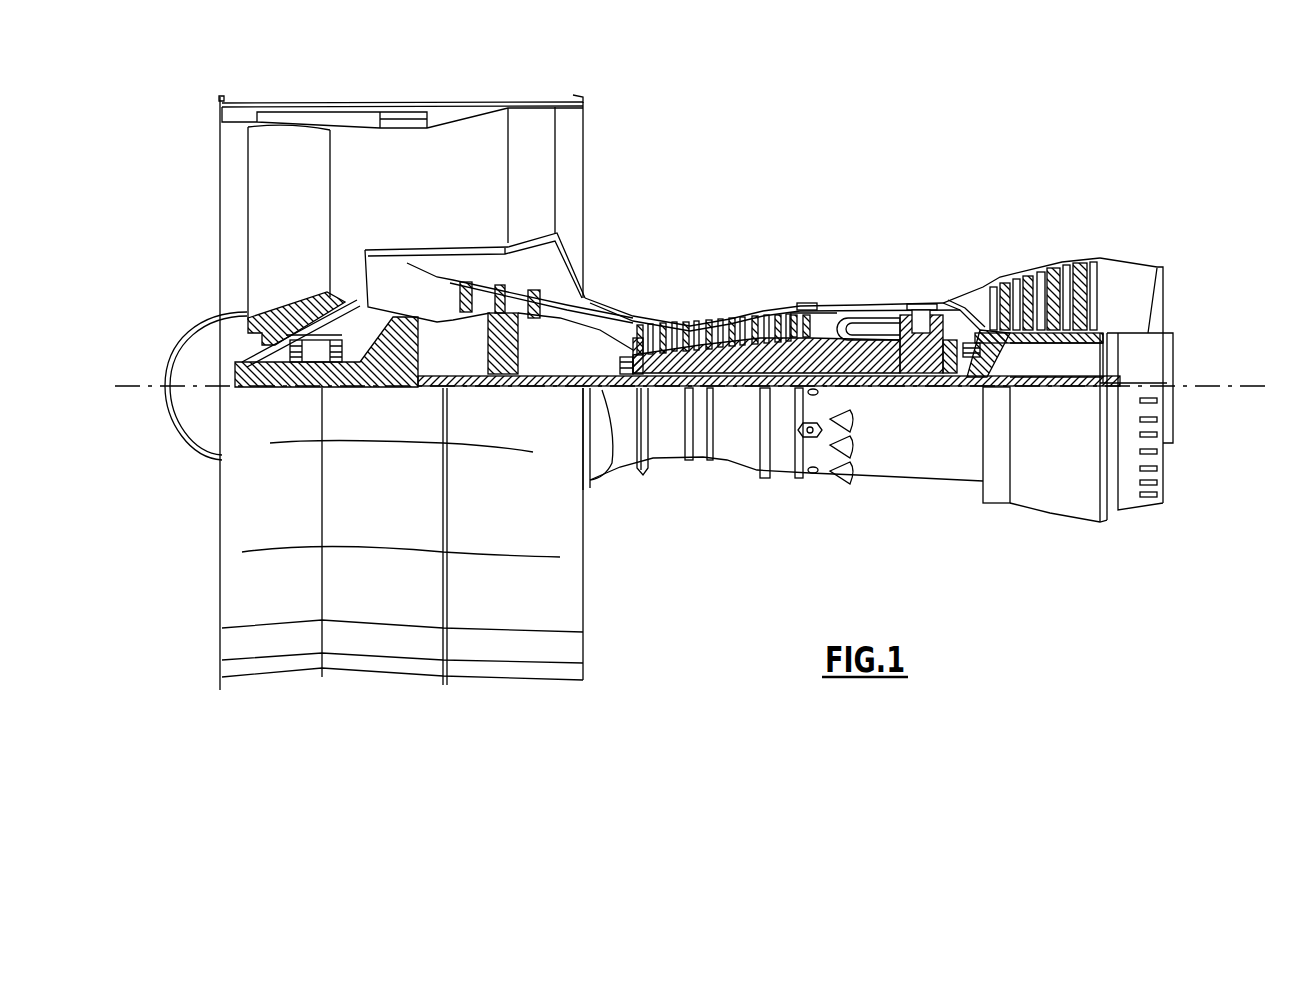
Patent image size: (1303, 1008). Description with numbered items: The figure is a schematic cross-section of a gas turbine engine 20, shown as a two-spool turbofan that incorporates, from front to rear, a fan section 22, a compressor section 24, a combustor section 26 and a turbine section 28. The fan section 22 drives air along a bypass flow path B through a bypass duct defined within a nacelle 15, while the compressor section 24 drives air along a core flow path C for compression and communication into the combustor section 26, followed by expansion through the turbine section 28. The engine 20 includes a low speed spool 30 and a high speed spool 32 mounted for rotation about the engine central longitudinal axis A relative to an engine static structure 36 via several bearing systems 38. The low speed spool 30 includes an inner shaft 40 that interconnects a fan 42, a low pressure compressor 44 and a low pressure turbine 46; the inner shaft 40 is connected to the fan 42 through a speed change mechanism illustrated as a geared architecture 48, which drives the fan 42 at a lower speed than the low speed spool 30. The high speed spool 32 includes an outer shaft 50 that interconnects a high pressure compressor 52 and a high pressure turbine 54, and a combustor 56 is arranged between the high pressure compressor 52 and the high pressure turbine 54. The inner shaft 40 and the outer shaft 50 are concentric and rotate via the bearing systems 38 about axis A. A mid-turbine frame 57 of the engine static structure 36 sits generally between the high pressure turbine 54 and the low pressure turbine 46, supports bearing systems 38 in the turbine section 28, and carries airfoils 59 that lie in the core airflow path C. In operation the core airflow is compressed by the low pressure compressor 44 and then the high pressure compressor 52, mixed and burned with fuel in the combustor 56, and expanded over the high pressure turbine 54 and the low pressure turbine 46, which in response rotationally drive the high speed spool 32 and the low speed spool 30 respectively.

The nacelle 15 is at (400, 108).
The gas turbine engine 20 is at (862, 150).
The fan section 22 is at (326, 84).
The compressor section 24 is at (636, 287).
The combustor section 26 is at (856, 268).
The turbine section 28 is at (1010, 232).
The low speed spool 30 is at (741, 400).
The high speed spool 32 is at (780, 323).
The engine static structure 36 is at (781, 490).
The bearing systems 38 is at (537, 360).
The inner shaft 40 is at (608, 470).
The fan 42 is at (303, 232).
The low pressure compressor 44 is at (506, 287).
The low pressure turbine 46 is at (1048, 260).
The geared architecture 48 is at (408, 368).
The outer shaft 50 is at (868, 377).
The high pressure compressor 52 is at (710, 340).
The high pressure turbine 54 is at (918, 303).
The combustor 56 is at (857, 327).
The mid-turbine frame 57 is at (970, 282).
The airfoils 59 is at (983, 343).